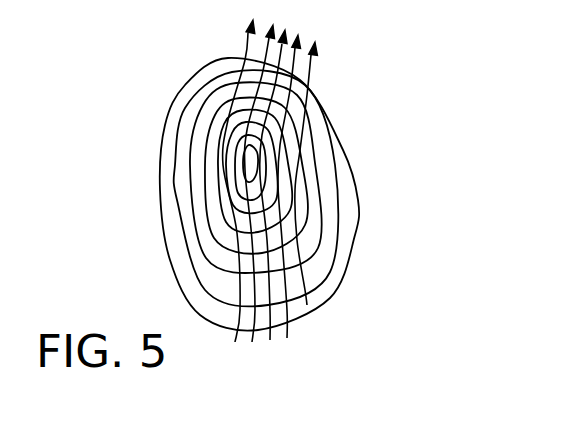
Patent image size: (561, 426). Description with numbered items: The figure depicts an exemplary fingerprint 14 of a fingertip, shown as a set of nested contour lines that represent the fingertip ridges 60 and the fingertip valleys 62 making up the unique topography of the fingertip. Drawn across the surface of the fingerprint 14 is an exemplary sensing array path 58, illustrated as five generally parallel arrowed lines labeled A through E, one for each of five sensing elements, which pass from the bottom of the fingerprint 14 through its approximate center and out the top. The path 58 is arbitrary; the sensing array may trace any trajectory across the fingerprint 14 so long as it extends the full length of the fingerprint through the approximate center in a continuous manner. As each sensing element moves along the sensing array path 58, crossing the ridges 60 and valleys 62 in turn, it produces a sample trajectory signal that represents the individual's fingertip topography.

The fingerprint 14 is at (157, 198).
The sensing array path 58 is at (333, 58).
The fingertip ridges 60 is at (310, 122).
The fingertip valleys 62 is at (342, 187).